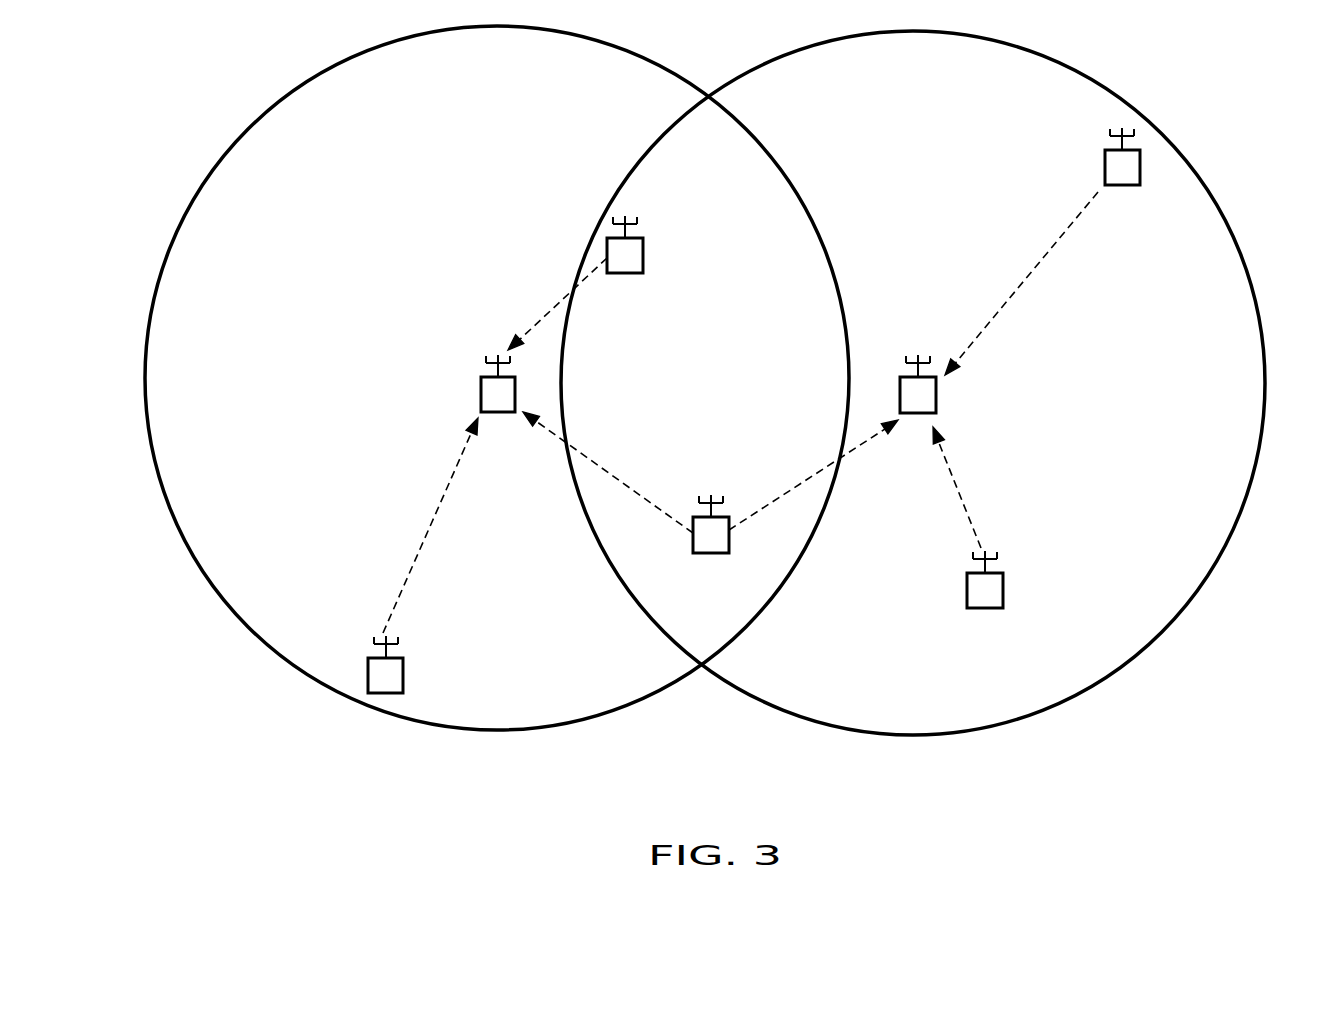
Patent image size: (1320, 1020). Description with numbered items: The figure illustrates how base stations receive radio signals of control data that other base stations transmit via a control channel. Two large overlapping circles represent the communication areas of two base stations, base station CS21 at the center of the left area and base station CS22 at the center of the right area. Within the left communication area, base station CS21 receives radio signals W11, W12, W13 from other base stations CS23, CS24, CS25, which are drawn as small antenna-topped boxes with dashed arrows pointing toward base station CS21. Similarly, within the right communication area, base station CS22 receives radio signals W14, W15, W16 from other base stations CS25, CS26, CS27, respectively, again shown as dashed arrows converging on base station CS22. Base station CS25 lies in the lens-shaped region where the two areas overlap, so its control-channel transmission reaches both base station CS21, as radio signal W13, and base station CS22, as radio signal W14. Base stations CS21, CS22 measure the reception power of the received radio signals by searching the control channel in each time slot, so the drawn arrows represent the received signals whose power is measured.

The base station CS21 is at (481, 393).
The base station CS22 is at (936, 393).
The base station CS23 is at (403, 676).
The base station CS24 is at (643, 255).
The base station CS25 is at (711, 553).
The base station CS26 is at (1105, 167).
The base station CS27 is at (985, 608).
The radio signal W11 is at (553, 310).
The radio signal W12 is at (425, 535).
The radio signal W13 is at (600, 468).
The radio signal W14 is at (800, 487).
The radio signal W15 is at (1022, 285).
The radio signal W16 is at (960, 492).